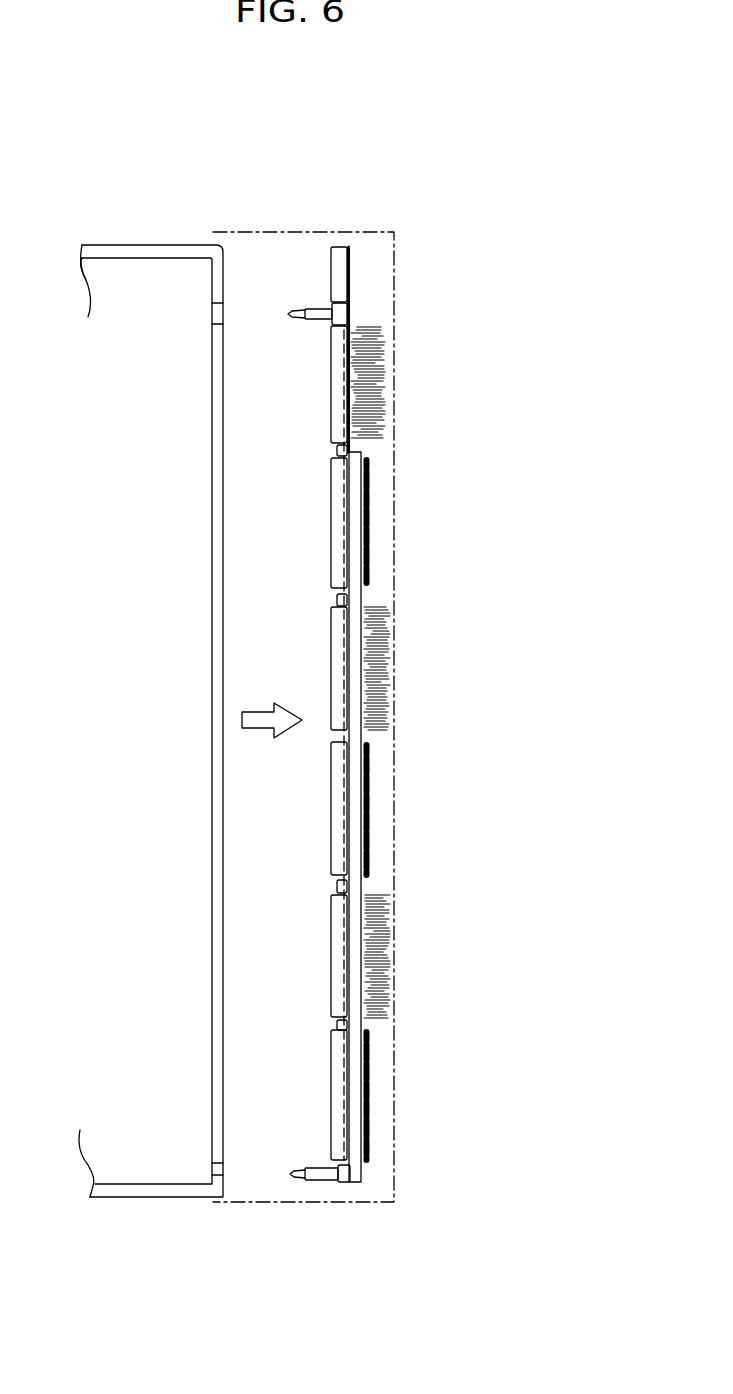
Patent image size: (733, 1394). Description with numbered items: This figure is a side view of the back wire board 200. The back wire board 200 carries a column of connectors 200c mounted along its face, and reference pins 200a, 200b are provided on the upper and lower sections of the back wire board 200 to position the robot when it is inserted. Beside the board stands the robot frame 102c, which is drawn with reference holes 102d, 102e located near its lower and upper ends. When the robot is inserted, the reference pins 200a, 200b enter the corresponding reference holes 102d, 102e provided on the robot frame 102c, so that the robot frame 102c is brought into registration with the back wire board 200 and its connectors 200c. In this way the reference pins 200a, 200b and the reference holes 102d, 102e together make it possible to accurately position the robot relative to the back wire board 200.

The robot frame 102c is at (210, 833).
The reference hole 102e is at (223, 317).
The reference hole 102d is at (224, 1174).
The back wire board 200 is at (363, 600).
The reference pin 200a is at (318, 1181).
The reference pin 200b is at (308, 308).
The connector 200c is at (365, 1073).